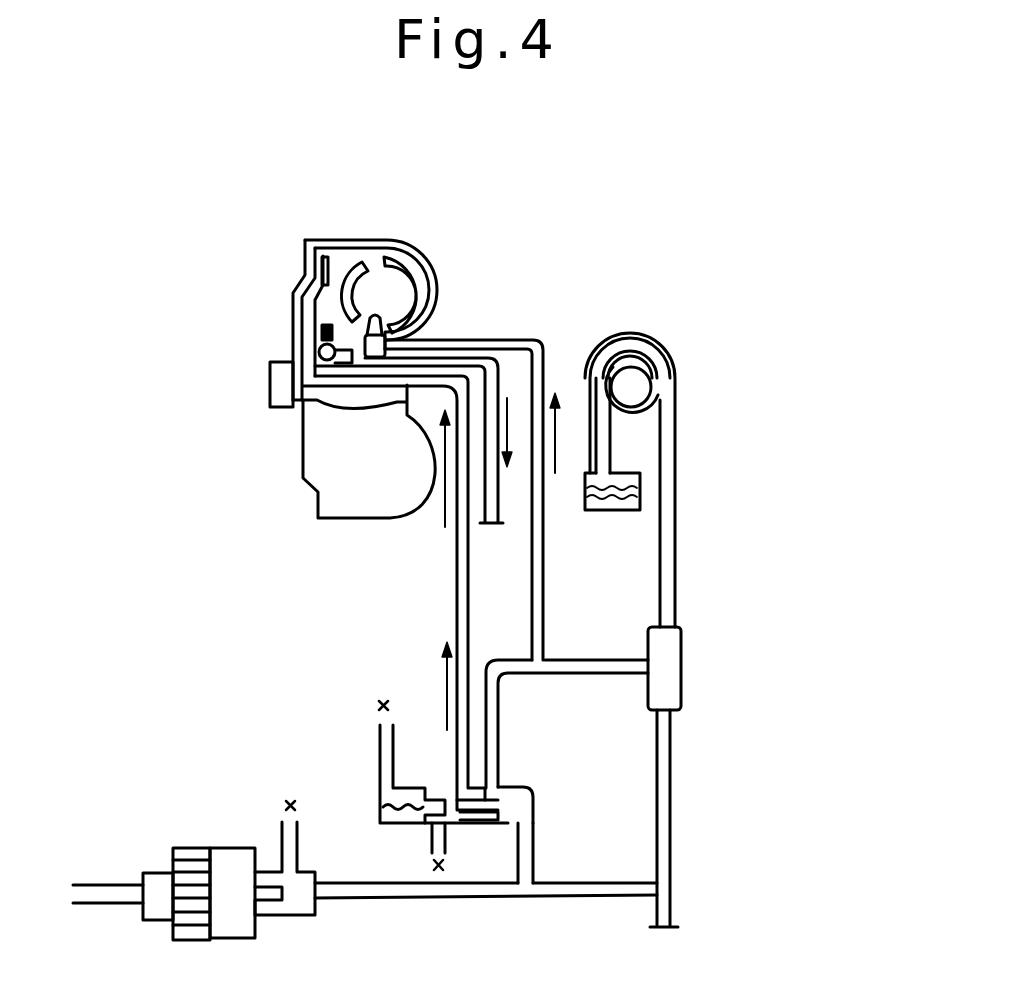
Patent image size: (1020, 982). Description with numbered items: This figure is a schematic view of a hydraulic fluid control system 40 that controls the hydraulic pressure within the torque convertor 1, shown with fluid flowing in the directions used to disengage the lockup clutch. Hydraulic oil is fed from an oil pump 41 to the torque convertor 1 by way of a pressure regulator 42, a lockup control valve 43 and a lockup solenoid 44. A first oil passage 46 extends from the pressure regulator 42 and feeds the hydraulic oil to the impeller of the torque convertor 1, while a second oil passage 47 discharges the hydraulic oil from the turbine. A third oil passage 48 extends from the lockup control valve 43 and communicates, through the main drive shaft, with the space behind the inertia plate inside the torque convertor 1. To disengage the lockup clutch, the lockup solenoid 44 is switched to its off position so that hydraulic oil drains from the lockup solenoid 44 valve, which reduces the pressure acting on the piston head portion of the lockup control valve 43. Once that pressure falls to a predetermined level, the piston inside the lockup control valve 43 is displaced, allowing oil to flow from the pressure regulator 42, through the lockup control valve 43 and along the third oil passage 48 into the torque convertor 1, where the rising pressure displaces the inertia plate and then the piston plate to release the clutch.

The torque convertor 1 is at (458, 240).
The hydraulic fluid control system 40 is at (753, 488).
The oil pump 41 is at (655, 346).
The pressure regulator 42 is at (663, 667).
The lockup control valve 43 is at (537, 777).
The lockup solenoid 44 is at (227, 873).
The first oil passage 46 is at (541, 349).
The second oil passage 47 is at (497, 480).
The third oil passage 48 is at (457, 560).